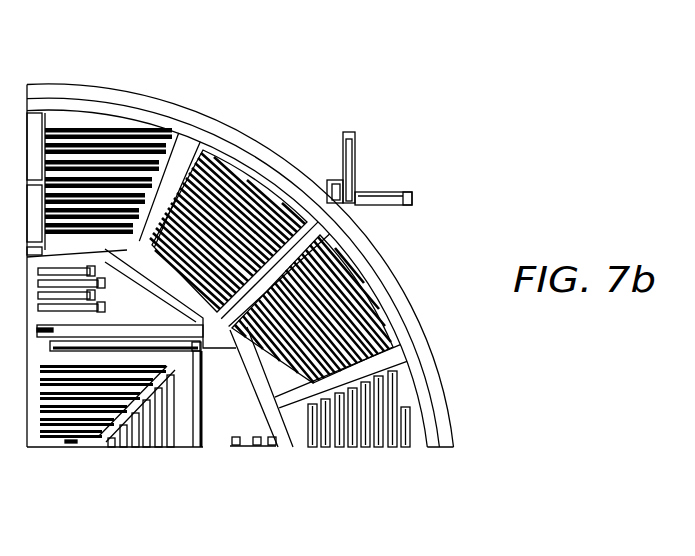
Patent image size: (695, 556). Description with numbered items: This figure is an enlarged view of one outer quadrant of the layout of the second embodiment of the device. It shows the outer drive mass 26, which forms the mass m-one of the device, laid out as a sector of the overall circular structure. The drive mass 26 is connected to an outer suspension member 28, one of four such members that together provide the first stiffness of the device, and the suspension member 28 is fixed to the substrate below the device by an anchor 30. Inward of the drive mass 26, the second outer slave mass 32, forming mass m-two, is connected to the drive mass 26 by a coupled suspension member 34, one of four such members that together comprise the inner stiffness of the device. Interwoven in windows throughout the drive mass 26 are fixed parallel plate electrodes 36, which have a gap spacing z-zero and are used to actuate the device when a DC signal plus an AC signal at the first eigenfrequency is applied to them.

The outer drive mass 26 is at (285, 448).
The outer suspension member 28 is at (357, 153).
The anchor 30 is at (338, 179).
The outer slave mass 32 is at (138, 325).
The coupled suspension member 34 is at (200, 446).
The fixed parallel plate electrode 36 is at (376, 420).